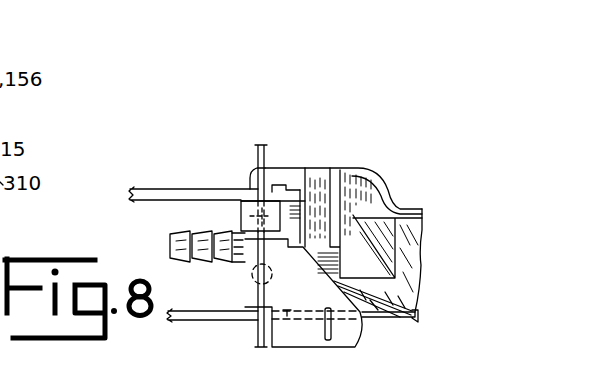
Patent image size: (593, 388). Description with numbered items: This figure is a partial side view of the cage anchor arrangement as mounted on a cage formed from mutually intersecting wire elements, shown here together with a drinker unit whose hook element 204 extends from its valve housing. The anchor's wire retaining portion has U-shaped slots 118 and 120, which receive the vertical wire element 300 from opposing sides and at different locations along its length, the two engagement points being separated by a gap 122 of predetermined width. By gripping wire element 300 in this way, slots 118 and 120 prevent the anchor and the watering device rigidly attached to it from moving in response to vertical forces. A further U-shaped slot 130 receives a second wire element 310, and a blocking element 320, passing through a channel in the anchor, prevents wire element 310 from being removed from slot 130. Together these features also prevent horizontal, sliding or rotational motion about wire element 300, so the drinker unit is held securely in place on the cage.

The hook element 204 is at (282, 173).
The wire element 300 is at (256, 152).
The wire element 310 is at (211, 311).
The U-shaped slot 118 is at (240, 216).
The gap 122 is at (249, 233).
The U-shaped slot 120 is at (271, 276).
The U-shaped slot 130 is at (288, 313).
The blocking element 320 is at (348, 331).